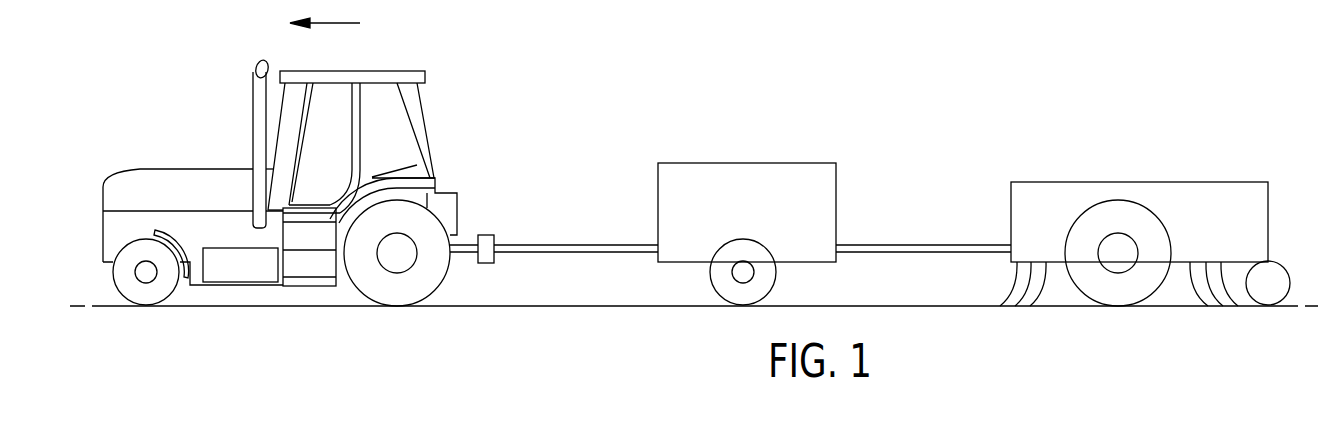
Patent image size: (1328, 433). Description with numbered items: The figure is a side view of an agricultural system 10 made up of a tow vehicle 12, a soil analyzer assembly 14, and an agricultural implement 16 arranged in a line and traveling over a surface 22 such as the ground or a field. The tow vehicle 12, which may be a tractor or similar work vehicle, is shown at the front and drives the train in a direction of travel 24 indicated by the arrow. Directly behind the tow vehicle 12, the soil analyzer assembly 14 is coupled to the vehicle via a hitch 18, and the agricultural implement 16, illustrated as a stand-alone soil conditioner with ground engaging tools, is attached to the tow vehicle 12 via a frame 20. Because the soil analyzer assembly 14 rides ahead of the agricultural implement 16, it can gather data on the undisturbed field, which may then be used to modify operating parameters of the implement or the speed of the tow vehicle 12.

The agricultural system 10 is at (968, 53).
The tow vehicle 12 is at (203, 167).
The soil analyzer assembly 14 is at (748, 163).
The agricultural implement 16 is at (1153, 182).
The hitch 18 is at (491, 217).
The frame 20 is at (638, 218).
The surface 22 is at (648, 308).
The direction of travel 24 is at (343, 24).